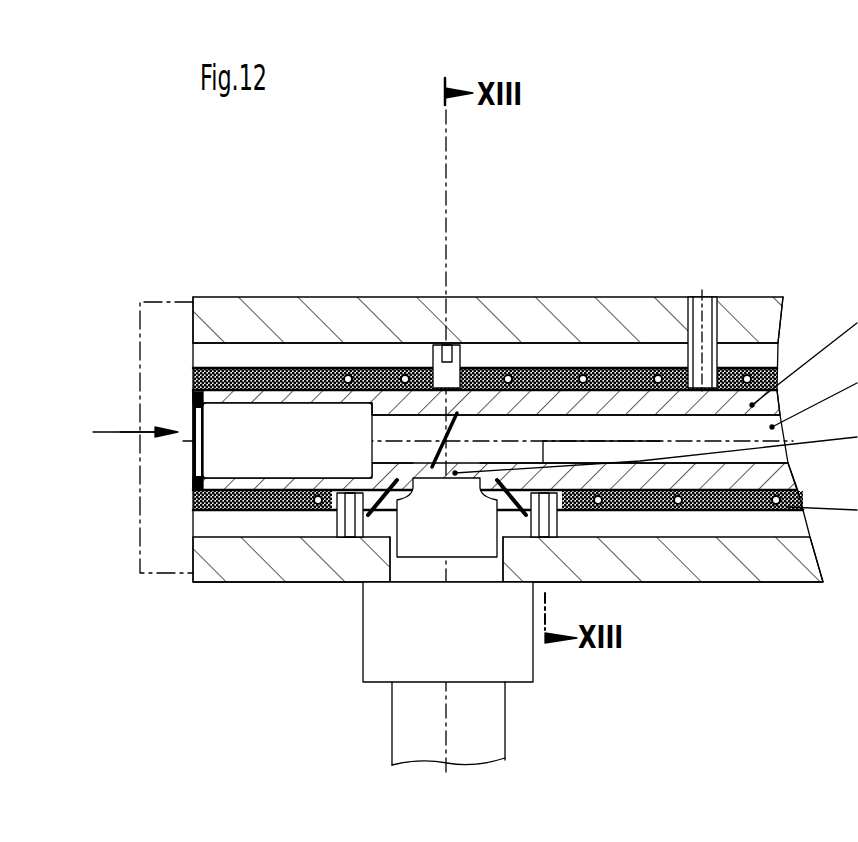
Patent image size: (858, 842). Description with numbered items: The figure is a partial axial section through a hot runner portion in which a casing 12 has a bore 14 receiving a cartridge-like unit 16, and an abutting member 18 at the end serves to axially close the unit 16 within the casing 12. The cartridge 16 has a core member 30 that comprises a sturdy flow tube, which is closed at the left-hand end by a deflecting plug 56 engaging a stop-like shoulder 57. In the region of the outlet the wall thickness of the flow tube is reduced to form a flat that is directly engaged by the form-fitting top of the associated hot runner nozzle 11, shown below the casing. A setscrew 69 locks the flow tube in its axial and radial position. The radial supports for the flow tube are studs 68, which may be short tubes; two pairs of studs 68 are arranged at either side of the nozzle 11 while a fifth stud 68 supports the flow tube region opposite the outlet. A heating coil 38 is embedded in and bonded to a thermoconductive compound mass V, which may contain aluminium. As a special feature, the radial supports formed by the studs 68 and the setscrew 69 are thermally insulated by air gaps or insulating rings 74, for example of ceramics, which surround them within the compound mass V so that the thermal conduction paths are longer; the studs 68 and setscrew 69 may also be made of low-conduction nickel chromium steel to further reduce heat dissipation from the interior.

The hot runner nozzle 11 is at (512, 643).
The casing 12 is at (211, 297).
The bore 14 is at (273, 343).
The cartridge-like unit 16 is at (118, 449).
The inner core member 30 is at (108, 458).
The abutting member 18 is at (140, 332).
The heating coil 38 is at (520, 465).
The deflecting plug 56 is at (353, 418).
The stop-like shoulder 57 is at (368, 403).
The stud 68 is at (522, 477).
The setscrew 69 is at (695, 330).
The insulating ring 74 is at (682, 380).
The thermoconductive compound mass V is at (315, 372).